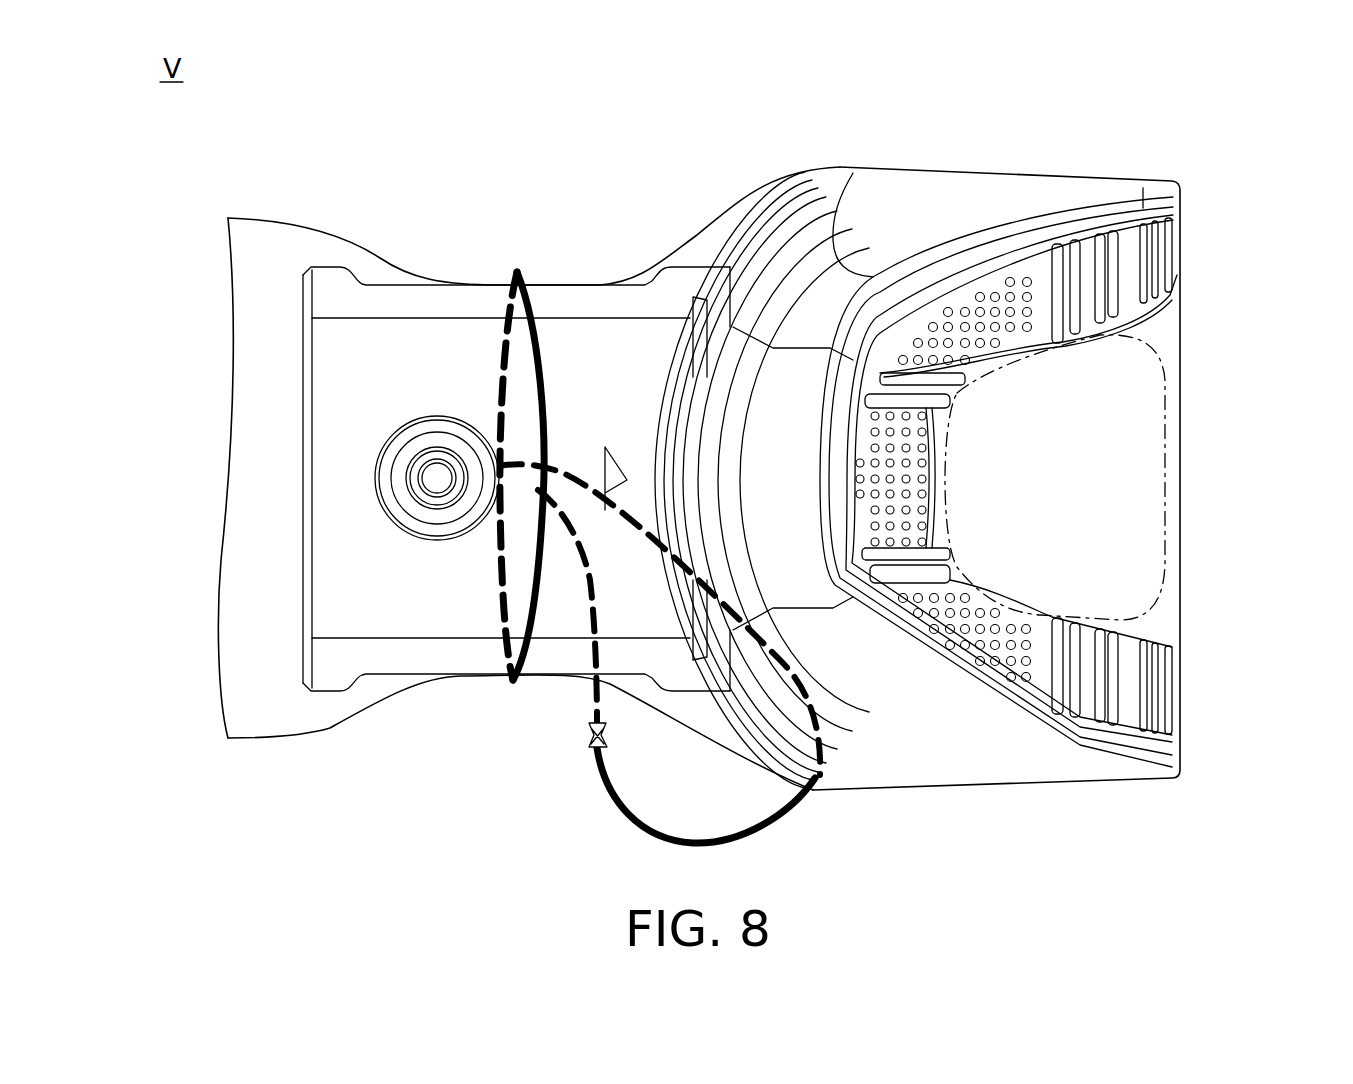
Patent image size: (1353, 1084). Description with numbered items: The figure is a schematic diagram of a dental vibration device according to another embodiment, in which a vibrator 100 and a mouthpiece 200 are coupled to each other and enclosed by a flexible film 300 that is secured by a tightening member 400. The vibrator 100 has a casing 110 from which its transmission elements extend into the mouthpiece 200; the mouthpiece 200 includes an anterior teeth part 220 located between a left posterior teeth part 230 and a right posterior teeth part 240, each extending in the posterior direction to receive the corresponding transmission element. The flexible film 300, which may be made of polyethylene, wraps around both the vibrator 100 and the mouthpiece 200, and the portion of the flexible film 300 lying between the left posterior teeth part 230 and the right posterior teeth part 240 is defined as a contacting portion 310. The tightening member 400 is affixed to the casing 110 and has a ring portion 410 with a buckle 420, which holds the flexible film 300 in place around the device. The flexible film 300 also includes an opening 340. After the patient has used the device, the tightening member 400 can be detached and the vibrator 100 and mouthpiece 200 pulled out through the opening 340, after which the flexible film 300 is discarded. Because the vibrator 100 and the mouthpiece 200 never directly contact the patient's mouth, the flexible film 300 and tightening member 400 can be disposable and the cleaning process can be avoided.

The vibrator 100 is at (396, 273).
The casing 110 is at (428, 620).
The mouthpiece 200 is at (1135, 182).
The anterior teeth part 220 is at (933, 547).
The left posterior teeth part 230 is at (1165, 254).
The right posterior teeth part 240 is at (1165, 705).
The flexible film 300 is at (1018, 159).
The contacting portion 310 is at (1188, 470).
The opening 340 is at (229, 478).
The tightening member 400 is at (522, 698).
The ring portion 410 is at (780, 818).
The buckle 420 is at (594, 750).